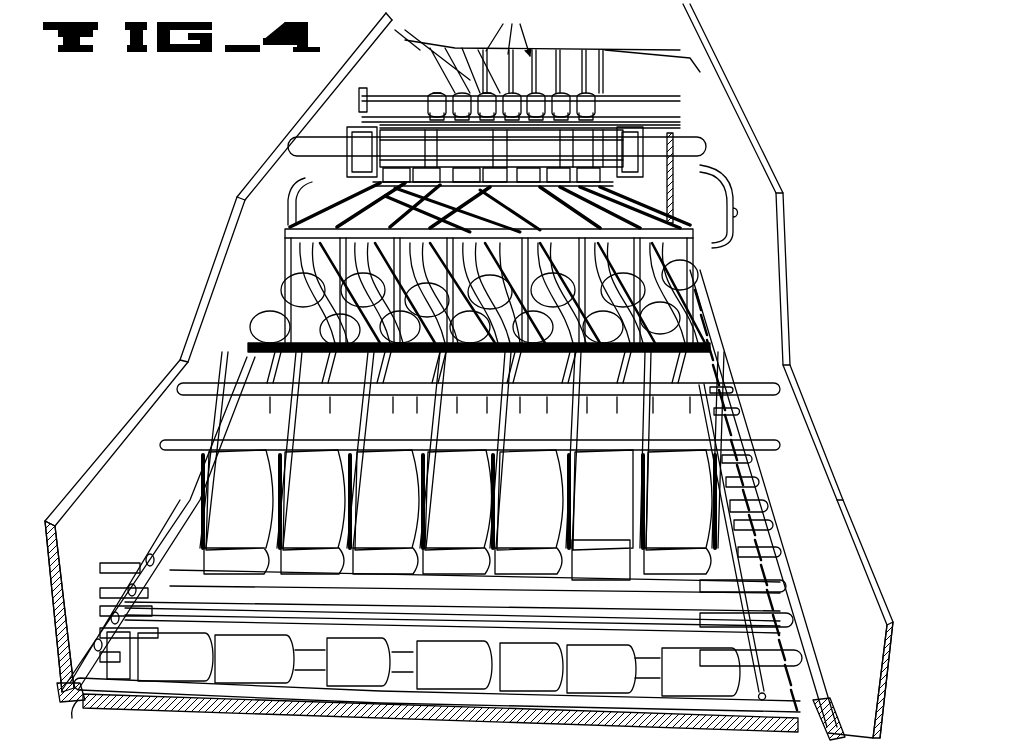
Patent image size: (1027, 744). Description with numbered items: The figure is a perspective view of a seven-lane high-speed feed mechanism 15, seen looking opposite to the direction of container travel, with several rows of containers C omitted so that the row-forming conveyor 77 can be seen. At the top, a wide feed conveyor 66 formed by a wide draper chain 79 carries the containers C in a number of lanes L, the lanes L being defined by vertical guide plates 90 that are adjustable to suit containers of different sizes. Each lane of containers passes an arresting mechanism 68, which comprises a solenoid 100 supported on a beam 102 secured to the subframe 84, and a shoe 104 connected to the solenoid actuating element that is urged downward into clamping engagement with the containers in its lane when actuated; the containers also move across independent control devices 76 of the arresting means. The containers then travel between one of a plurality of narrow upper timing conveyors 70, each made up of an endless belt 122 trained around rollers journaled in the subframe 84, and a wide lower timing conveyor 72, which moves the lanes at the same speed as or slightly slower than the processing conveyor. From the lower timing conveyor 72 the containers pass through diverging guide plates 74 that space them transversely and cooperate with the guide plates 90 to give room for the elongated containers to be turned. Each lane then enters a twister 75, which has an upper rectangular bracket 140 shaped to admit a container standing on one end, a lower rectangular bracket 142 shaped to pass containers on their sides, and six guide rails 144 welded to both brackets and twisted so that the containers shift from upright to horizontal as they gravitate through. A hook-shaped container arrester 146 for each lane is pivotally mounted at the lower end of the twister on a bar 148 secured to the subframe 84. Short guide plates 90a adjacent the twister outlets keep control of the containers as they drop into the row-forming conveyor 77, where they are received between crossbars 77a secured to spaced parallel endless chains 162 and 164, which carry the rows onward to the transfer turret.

The high-speed feed mechanism 15 is at (205, 163).
The feed conveyor 66 is at (658, 72).
The arresting mechanism 68 is at (432, 92).
The upper timing conveyors 70 is at (296, 141).
The lower timing conveyor 72 is at (505, 212).
The diverging guide plates 74 is at (327, 223).
The twisters 75 is at (287, 267).
The independent control devices 76 is at (262, 427).
The row-forming conveyor 77 is at (764, 587).
The crossbars 77a is at (142, 573).
The draper chain 79 is at (621, 62).
The subframe 84 is at (238, 200).
The vertical guide plates 90 is at (581, 93).
The short guide plates 90a is at (383, 512).
The solenoid 100 is at (488, 93).
The beam 102 is at (685, 102).
The shoe 104 is at (362, 101).
The endless belts 122 is at (527, 147).
The upper rectangular bracket 140 is at (290, 236).
The lower rectangular bracket 142 is at (258, 347).
The guide rails 144 is at (282, 328).
The hook-shaped container arrester 146 is at (325, 527).
The bar 148 is at (782, 443).
The endless chain 162 is at (68, 722).
The endless chain 164 is at (762, 514).
The lanes L is at (508, 28).
The containers C is at (290, 296).